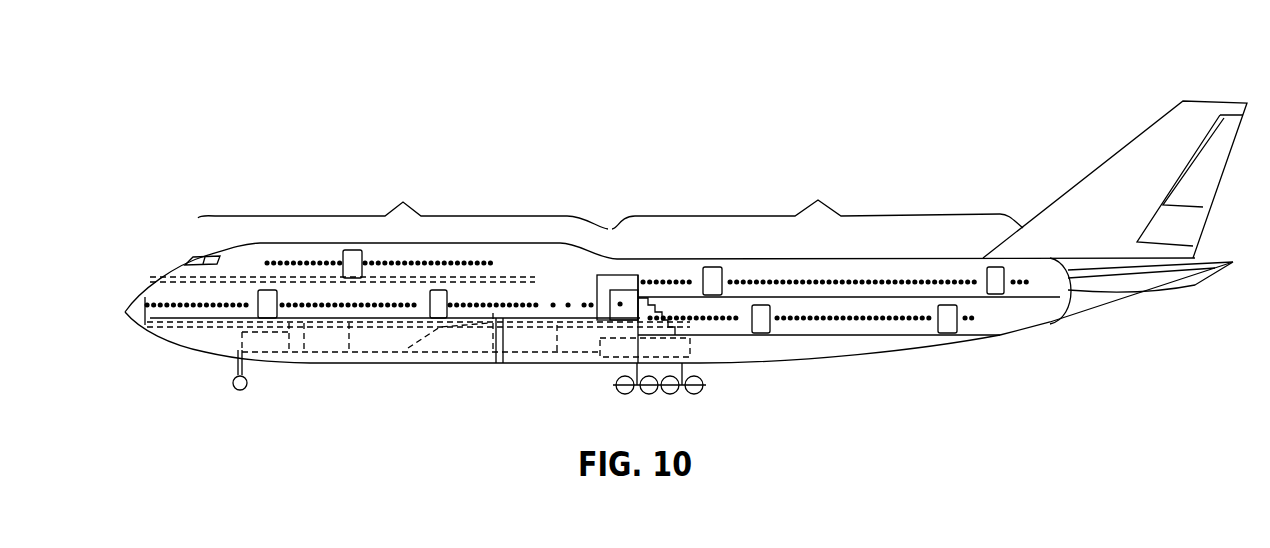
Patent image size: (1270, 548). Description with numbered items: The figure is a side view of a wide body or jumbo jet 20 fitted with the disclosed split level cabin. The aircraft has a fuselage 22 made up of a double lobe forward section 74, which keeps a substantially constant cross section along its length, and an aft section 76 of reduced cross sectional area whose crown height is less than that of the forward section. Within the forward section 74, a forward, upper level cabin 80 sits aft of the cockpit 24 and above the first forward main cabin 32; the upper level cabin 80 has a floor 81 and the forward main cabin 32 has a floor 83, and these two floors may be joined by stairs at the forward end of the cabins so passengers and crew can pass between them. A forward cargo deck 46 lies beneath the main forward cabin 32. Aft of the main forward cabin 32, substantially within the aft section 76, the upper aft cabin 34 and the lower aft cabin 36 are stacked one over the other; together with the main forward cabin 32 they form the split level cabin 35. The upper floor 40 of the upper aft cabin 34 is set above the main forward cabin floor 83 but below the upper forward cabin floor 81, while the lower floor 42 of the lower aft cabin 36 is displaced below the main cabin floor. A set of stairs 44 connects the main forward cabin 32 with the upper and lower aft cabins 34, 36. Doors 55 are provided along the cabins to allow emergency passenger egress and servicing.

The jumbo jet 20 is at (253, 152).
The fuselage 22 is at (217, 340).
The cockpit 24 is at (200, 232).
The first forward main cabin 32 is at (191, 296).
The upper aft cabin 34 is at (893, 264).
The split level cabin 35 is at (660, 203).
The lower aft cabin 36 is at (930, 324).
The upper floor 40 is at (850, 297).
The lower floor 42 is at (918, 325).
The stairs 44 is at (626, 331).
The forward cargo deck 46 is at (368, 340).
The doors 55 is at (353, 250).
The forward section 74 is at (403, 202).
The aft section 76 is at (817, 201).
The forward upper level cabin 80 is at (300, 257).
The floor of the forward upper level cabin 81 is at (397, 262).
The floor of the forward main cabin 83 is at (179, 322).